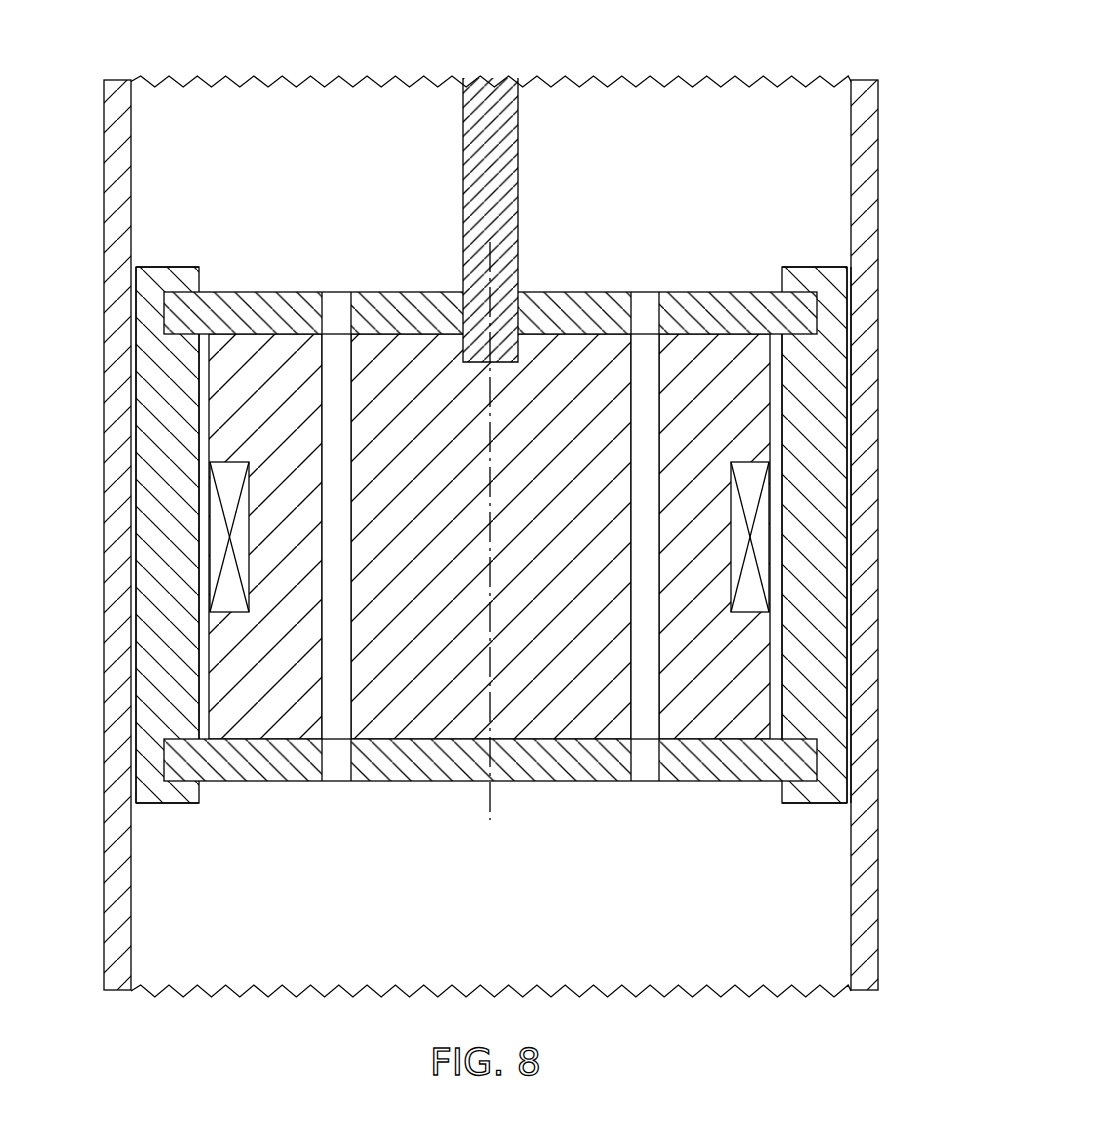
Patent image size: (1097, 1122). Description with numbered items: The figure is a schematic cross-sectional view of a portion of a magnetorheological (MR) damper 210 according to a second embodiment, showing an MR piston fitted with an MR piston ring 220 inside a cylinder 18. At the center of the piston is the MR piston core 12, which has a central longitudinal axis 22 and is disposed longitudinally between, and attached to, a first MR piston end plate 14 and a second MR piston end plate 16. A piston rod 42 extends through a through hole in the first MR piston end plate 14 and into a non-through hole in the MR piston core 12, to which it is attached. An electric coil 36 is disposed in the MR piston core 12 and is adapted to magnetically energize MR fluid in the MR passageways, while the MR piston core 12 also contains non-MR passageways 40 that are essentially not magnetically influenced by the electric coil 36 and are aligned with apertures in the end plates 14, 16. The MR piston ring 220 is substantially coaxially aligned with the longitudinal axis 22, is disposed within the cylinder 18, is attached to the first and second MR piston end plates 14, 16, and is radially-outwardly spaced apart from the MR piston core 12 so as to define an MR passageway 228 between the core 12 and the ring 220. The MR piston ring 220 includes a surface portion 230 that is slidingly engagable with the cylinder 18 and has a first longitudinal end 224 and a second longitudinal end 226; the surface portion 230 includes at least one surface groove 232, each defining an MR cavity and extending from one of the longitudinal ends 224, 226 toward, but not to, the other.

The magnetorheological damper 210 is at (491, 501).
The cylinder 18 is at (872, 190).
The piston rod 42 is at (468, 190).
The first MR piston end plate 14 is at (572, 292).
The second MR piston end plate 16 is at (560, 781).
The MR piston core 12 is at (582, 487).
The central longitudinal axis 22 is at (490, 497).
The non-MR passageway 40 is at (345, 586).
The electric coil 36 is at (735, 535).
The MR piston ring 220 is at (825, 357).
The first longitudinal end 224 is at (850, 268).
The second longitudinal end 226 is at (850, 805).
The MR passageway 228 is at (776, 690).
The surface portion 230 is at (858, 537).
The surface groove 232 is at (846, 622).